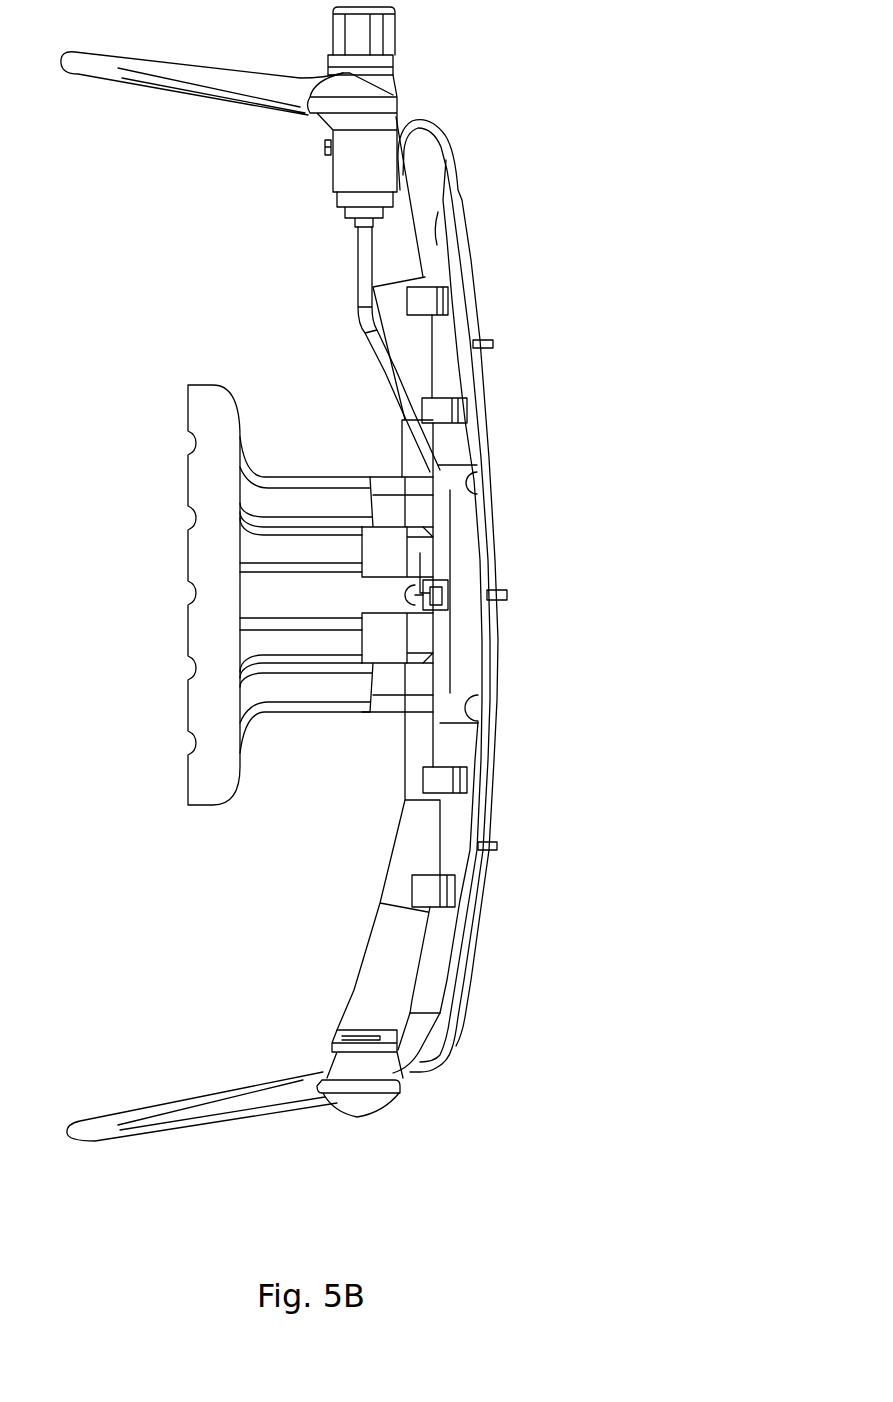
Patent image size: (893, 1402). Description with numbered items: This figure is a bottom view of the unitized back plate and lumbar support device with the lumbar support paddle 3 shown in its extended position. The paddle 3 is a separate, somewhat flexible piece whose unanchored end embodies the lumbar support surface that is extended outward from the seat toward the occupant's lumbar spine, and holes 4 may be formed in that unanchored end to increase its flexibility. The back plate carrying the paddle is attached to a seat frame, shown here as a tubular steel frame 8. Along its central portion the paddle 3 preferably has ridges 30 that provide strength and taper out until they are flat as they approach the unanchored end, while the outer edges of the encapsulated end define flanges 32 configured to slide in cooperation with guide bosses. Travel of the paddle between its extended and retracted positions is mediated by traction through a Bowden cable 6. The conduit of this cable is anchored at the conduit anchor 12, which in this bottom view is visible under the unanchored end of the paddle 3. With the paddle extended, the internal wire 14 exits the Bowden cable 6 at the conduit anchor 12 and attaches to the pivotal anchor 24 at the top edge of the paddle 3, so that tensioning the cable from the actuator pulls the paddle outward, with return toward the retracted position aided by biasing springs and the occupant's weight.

The lumbar support paddle 3 is at (212, 743).
The holes 4 is at (185, 508).
The cable 6 is at (358, 261).
The tubular steel frame 8 is at (440, 247).
The conduit anchor 12 is at (450, 600).
The internal wire 14 is at (420, 553).
The pivotal anchor 24 is at (402, 590).
The ridges 30 is at (297, 592).
The flanges 32 is at (330, 685).